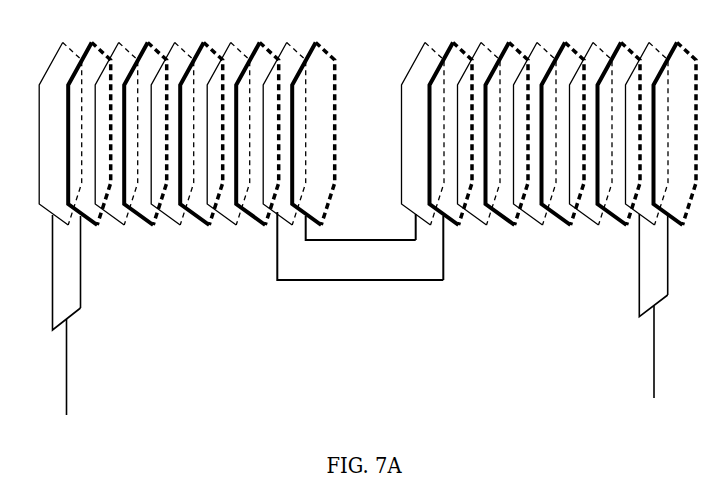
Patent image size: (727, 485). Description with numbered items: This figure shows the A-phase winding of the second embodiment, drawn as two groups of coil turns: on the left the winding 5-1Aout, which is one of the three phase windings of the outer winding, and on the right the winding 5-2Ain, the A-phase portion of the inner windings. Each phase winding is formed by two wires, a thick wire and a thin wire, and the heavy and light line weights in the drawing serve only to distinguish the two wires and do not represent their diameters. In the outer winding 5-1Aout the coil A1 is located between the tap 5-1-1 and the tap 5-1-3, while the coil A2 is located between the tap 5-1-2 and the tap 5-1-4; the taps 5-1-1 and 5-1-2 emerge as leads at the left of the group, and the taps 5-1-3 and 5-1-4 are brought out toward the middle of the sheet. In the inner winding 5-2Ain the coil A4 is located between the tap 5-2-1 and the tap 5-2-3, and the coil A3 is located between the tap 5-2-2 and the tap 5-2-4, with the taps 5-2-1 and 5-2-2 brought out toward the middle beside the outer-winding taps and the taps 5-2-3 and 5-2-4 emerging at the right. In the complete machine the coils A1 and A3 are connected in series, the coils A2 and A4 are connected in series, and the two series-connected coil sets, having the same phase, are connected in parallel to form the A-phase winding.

The winding 5-1Aout is at (187, 179).
The winding 5-2Ain is at (549, 179).
The tap 5-1-1 is at (50, 315).
The tap 5-1-2 is at (95, 262).
The tap 5-1-3 is at (345, 264).
The tap 5-1-4 is at (351, 243).
The tap 5-2-1 is at (417, 242).
The tap 5-2-2 is at (454, 266).
The tap 5-2-3 is at (638, 306).
The tap 5-2-4 is at (673, 256).
The coil A1 is at (68, 225).
The coil A2 is at (156, 224).
The coil A3 is at (460, 224).
The coil A4 is at (543, 215).